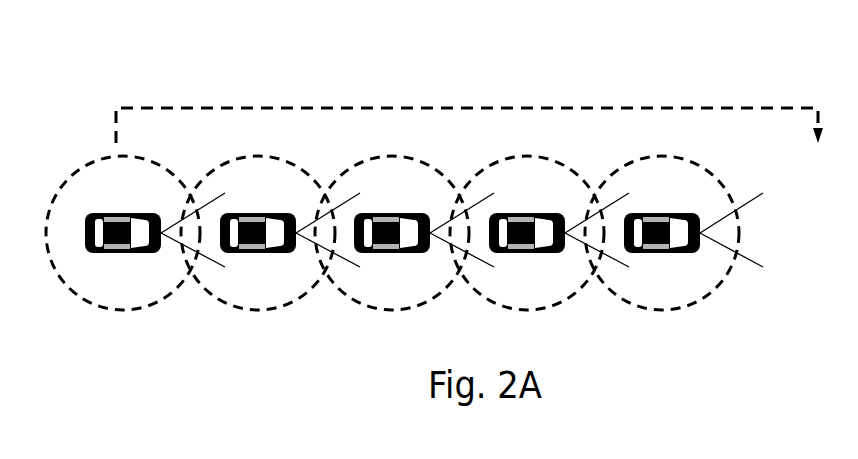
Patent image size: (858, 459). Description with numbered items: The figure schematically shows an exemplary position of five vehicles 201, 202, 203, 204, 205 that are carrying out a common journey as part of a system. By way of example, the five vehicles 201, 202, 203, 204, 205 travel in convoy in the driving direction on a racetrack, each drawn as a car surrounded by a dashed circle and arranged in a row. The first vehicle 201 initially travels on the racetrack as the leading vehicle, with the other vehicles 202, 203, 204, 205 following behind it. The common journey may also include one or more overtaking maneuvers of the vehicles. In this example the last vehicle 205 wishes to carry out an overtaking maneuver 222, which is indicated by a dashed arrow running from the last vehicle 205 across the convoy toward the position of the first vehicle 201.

The first vehicle 201 is at (674, 233).
The vehicle 202 is at (539, 233).
The vehicle 203 is at (404, 233).
The vehicle 204 is at (270, 233).
The last vehicle 205 is at (135, 233).
The overtaking maneuver 222 is at (469, 83).